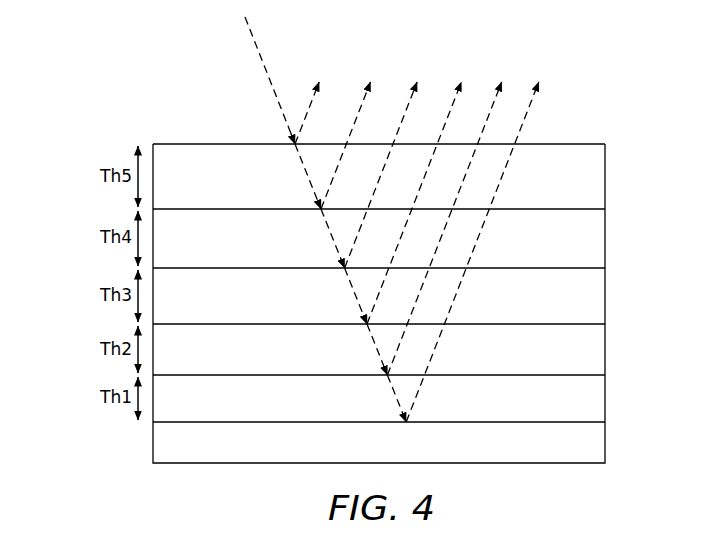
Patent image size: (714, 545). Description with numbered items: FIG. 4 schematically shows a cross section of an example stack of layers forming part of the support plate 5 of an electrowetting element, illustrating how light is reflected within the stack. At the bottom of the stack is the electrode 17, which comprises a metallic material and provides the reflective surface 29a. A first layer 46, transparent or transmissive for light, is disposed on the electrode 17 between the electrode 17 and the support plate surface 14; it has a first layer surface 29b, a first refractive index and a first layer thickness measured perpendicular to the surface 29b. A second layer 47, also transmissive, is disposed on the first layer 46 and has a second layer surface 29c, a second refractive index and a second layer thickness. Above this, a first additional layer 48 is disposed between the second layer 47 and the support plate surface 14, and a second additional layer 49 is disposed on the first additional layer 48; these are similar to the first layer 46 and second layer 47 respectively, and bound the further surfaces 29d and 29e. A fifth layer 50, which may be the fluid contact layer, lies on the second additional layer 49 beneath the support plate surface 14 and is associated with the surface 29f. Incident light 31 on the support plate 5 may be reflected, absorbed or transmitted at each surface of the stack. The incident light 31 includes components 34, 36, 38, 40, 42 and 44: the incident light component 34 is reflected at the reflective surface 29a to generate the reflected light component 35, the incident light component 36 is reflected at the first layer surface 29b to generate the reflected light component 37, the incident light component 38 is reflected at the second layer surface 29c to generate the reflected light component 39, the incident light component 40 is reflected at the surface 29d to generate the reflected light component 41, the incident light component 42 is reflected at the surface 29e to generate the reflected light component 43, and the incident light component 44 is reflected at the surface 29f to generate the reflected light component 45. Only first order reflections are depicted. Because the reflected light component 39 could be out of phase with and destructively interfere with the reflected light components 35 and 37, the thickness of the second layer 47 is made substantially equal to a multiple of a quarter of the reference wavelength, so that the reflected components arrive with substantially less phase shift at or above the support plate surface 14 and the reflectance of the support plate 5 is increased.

The support plate 5 is at (178, 100).
The support plate surface 14 is at (583, 144).
The electrode 17 is at (595, 443).
The reflective surface 29a is at (605, 422).
The first layer surface 29b is at (605, 375).
The second layer surface 29c is at (605, 324).
The surface 29d is at (605, 268).
The surface 29e is at (605, 209).
The surface 29f is at (605, 144).
The incident light 31 is at (255, 49).
The incident light component 34 is at (403, 420).
The reflected light component 35 is at (530, 101).
The incident light component 36 is at (384, 373).
The reflected light component 37 is at (495, 101).
The incident light component 38 is at (364, 322).
The reflected light component 39 is at (454, 101).
The incident light component 40 is at (341, 266).
The reflected light component 41 is at (409, 101).
The incident light component 42 is at (318, 208).
The reflected light component 43 is at (362, 101).
The incident light component 44 is at (292, 140).
The reflected light component 45 is at (310, 101).
The first layer 46 is at (595, 398).
The second layer 47 is at (595, 350).
The first additional layer 48 is at (595, 297).
The second additional layer 49 is at (595, 238).
The fifth layer 50 is at (595, 177).